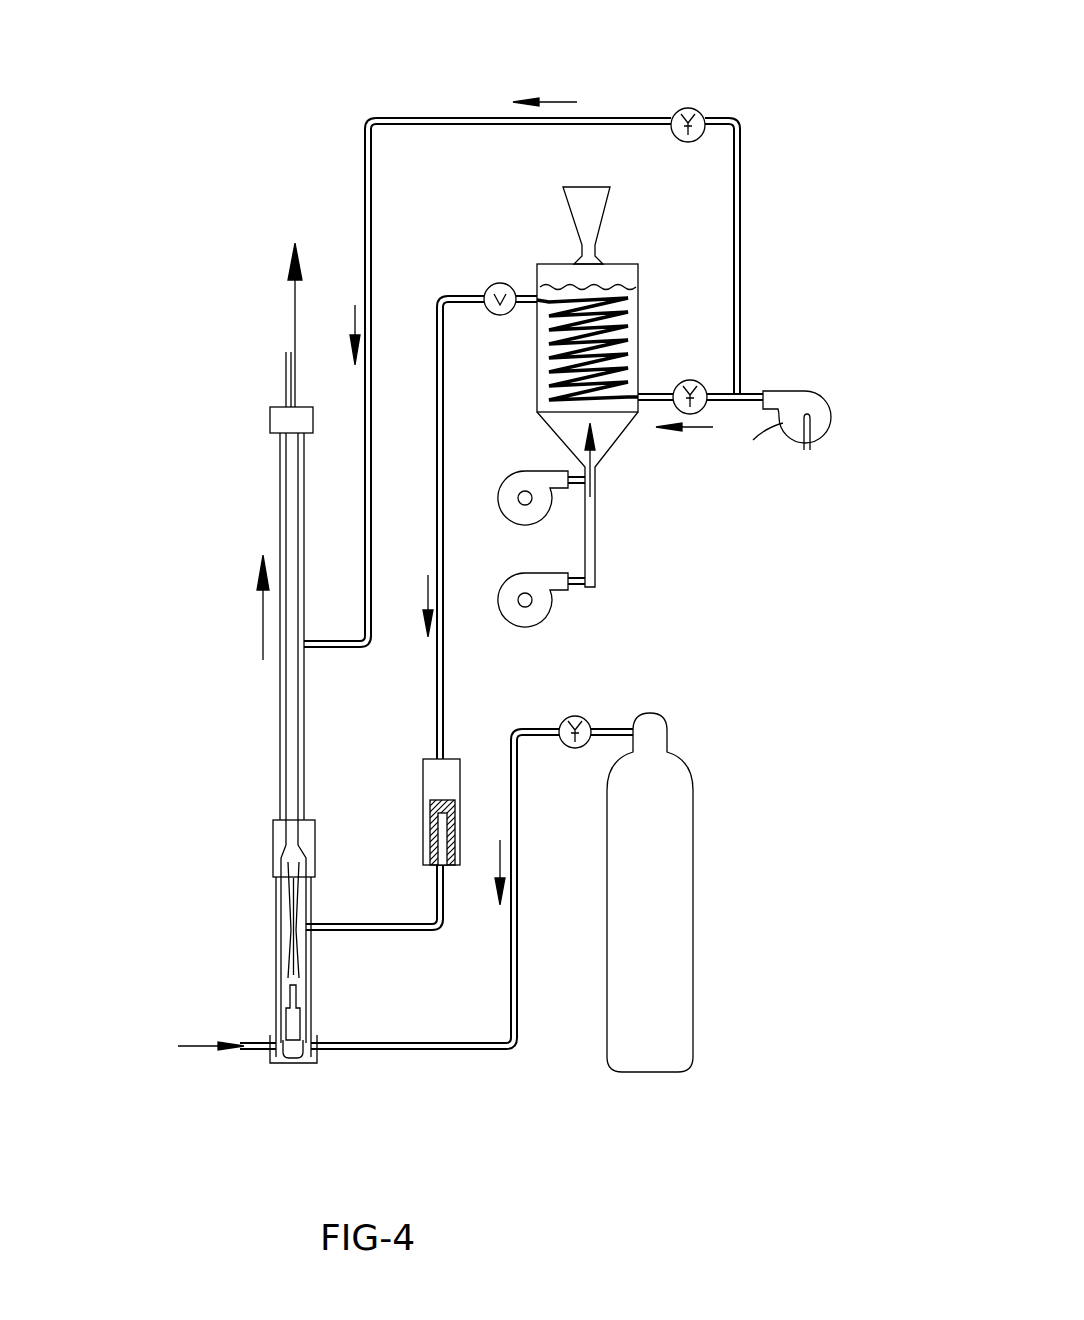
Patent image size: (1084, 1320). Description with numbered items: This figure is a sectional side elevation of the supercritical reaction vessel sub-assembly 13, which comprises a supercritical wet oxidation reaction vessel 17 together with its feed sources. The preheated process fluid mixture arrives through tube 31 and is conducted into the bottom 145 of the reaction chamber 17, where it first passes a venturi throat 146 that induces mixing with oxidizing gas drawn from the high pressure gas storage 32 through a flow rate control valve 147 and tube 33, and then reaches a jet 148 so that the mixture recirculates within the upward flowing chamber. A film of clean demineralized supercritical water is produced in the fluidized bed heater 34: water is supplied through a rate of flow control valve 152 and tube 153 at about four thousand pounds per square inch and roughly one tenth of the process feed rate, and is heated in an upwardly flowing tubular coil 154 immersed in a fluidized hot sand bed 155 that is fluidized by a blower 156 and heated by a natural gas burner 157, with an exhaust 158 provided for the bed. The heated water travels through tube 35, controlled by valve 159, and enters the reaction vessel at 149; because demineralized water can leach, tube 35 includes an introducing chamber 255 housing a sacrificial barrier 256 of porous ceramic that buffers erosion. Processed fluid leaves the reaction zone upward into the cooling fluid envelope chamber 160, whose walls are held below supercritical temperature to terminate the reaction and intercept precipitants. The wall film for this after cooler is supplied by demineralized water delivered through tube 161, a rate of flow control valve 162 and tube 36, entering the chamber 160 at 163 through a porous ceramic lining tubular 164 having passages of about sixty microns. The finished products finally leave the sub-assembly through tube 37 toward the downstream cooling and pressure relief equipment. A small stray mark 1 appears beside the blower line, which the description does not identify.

The blower outlet 1 is at (754, 463).
The supercritical reaction vessel sub-assembly 13 is at (219, 238).
The supercritical wet oxidation reaction vessel 17 is at (174, 803).
The tube 31 is at (240, 1052).
The source of evaporated high pressure oxidizing gas 32 is at (693, 880).
The tube 33 is at (516, 1050).
The fluidized bed furnace 34 is at (537, 330).
The tube 35 is at (447, 722).
The tube 36 is at (370, 317).
The tube 37 is at (286, 383).
The bottom of the reaction chamber 145 is at (285, 905).
The venturi throat 146 is at (292, 960).
The flow rate control valve 147 is at (580, 716).
The jet 148 is at (300, 990).
The clean water entry point 149 is at (310, 940).
The rate of flow control valve 152 is at (690, 380).
The tube 153 is at (668, 400).
The upwardly flowing tubular coil 154 is at (617, 305).
The fluidized hot sand bed 155 is at (540, 406).
The blower 156 is at (543, 522).
The natural gas burner 157 is at (550, 614).
The exhaust 158 is at (597, 190).
The valve 159 is at (503, 283).
The cooling fluid envelope chamber 160 is at (282, 765).
The tube 161 is at (742, 300).
The rate of flow control valve 162 is at (700, 108).
The water delivery point 163 is at (300, 660).
The porous ceramic lining tubular 164 is at (283, 500).
The introducing chamber 255 is at (424, 790).
The sacrificial barrier 256 is at (432, 822).